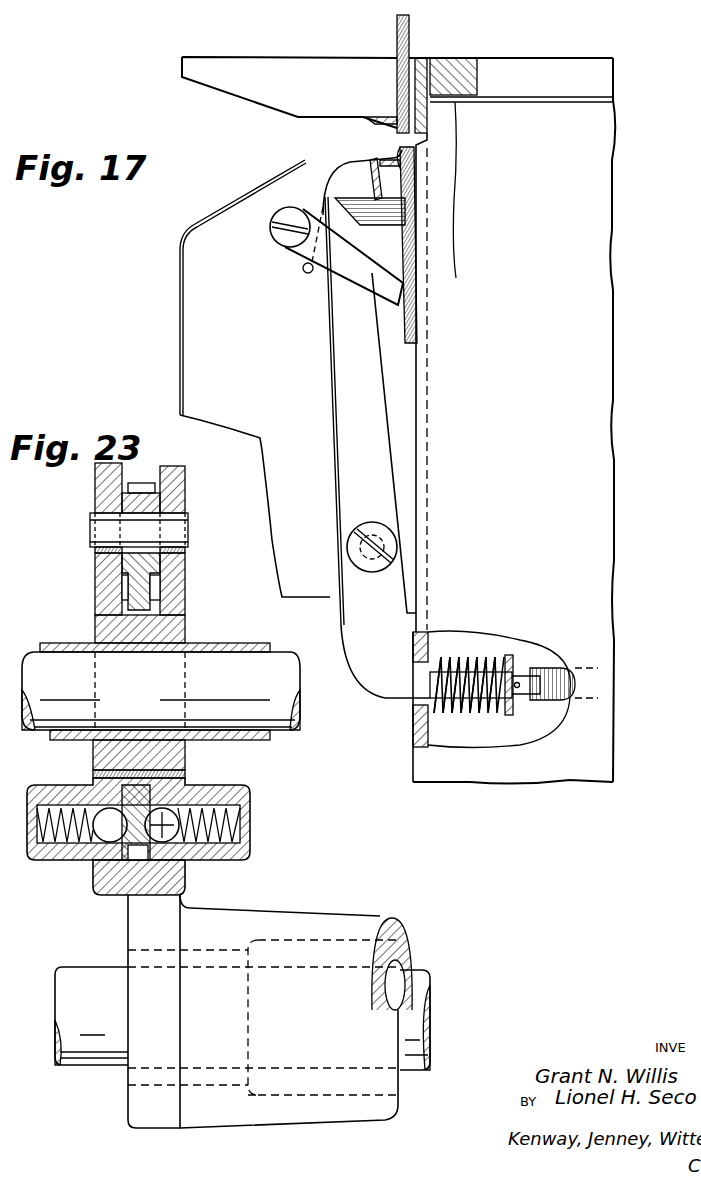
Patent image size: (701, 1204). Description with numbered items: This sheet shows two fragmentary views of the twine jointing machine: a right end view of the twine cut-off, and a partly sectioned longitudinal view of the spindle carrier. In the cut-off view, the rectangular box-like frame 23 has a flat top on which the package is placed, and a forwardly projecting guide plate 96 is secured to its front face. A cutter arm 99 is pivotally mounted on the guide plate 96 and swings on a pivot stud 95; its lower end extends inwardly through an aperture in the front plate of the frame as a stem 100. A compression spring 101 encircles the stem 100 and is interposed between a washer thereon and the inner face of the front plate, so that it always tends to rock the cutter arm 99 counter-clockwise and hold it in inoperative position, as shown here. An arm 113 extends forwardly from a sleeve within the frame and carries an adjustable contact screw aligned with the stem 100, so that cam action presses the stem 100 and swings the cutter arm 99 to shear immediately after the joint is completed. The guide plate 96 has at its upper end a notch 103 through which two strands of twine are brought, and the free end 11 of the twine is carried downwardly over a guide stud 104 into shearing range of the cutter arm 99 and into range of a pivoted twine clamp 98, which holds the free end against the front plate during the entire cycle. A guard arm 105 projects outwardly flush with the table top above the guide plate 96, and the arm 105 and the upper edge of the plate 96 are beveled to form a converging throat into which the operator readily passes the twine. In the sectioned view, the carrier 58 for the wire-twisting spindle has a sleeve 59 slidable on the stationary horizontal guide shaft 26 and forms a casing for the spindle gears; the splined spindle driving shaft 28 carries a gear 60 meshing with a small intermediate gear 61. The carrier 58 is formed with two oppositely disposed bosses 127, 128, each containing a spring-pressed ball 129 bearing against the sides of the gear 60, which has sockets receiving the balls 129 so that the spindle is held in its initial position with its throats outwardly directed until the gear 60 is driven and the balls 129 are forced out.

In FIG. 17, the free end of the twine 11 is at (408, 345).
In FIG. 17, the frame 23 is at (610, 480).
In FIG. 23, the guide shaft 26 is at (100, 1052).
In FIG. 23, the spindle driving shaft 28 is at (292, 735).
In FIG. 23, the carrier 58 is at (95, 582).
In FIG. 23, the sleeve 59 is at (325, 912).
In FIG. 23, the gear 60 is at (172, 752).
In FIG. 23, the intermediate gear 61 is at (145, 560).
In FIG. 17, the pivot stud 95 is at (376, 573).
In FIG. 17, the guide plate 96 is at (182, 278).
In FIG. 17, the twine clamp 98 is at (312, 274).
In FIG. 17, the cutter arm 99 is at (338, 392).
In FIG. 17, the stem 100 is at (512, 672).
In FIG. 17, the compression spring 101 is at (482, 718).
In FIG. 17, the notch 103 is at (399, 129).
In FIG. 17, the guide stud 104 is at (352, 212).
In FIG. 17, the guard arm 105 is at (217, 78).
In FIG. 17, the arm 113 is at (559, 702).
In FIG. 23, the housing 127 is at (235, 862).
In FIG. 23, the housing 128 is at (60, 862).
In FIG. 23, the balls 129 is at (105, 835).